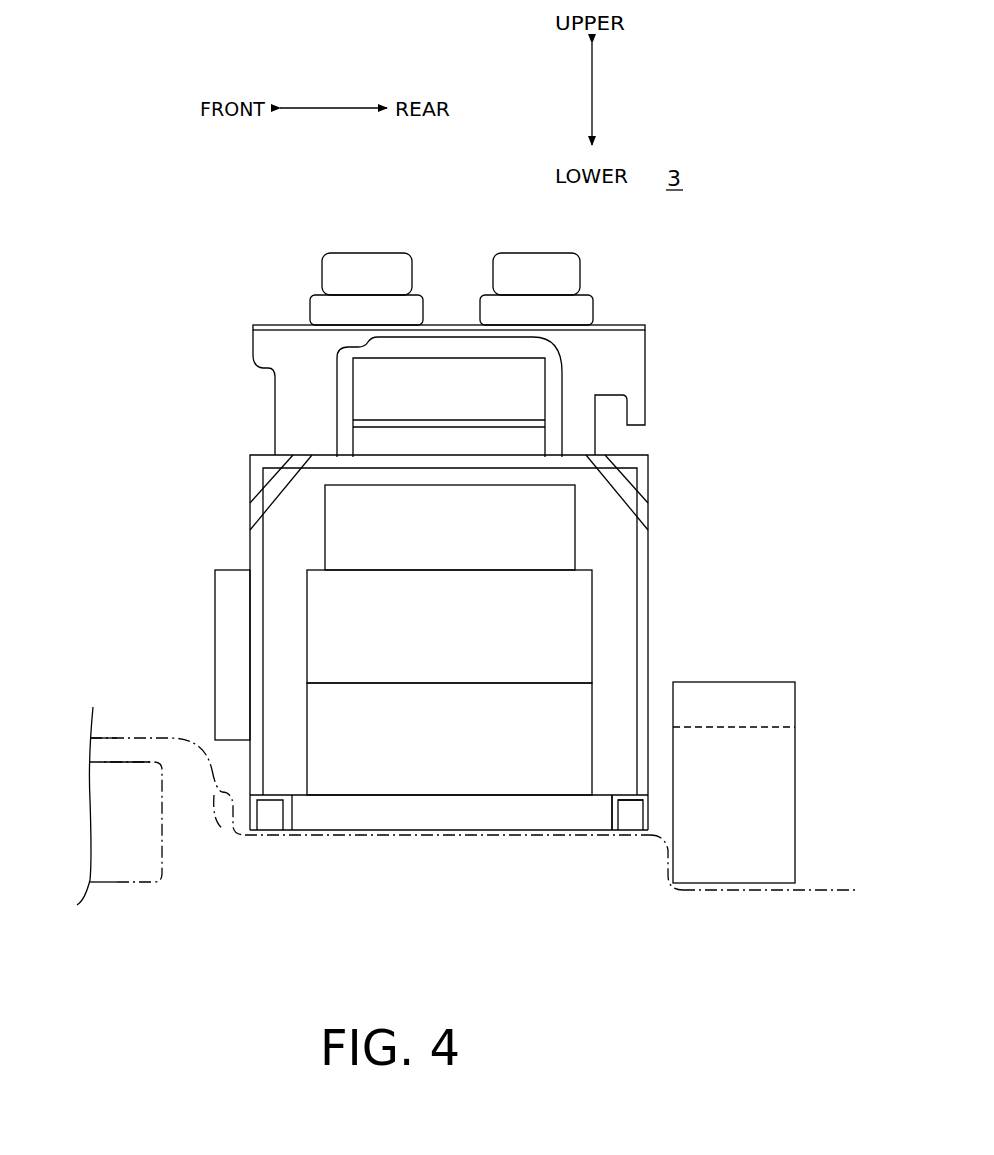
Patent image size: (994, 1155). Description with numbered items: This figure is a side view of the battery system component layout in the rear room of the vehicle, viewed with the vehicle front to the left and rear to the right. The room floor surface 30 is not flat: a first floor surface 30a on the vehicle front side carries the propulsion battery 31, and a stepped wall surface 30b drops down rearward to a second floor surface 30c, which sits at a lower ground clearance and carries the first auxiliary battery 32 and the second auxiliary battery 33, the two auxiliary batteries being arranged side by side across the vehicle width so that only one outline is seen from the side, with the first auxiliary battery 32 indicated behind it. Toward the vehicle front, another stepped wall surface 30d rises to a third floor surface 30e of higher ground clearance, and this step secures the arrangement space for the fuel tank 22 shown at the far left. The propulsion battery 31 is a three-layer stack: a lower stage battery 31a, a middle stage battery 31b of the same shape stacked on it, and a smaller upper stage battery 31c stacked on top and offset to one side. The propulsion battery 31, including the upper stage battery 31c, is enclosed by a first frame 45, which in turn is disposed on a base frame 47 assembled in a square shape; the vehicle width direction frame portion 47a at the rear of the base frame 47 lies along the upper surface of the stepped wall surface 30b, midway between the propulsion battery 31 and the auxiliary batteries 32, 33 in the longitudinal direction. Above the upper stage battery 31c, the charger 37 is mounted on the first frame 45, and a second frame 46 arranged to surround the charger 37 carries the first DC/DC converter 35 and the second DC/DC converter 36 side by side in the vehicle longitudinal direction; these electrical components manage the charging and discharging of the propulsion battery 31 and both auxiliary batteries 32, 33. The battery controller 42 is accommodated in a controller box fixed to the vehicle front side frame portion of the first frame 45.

The fuel tank 22 is at (103, 887).
The room floor surface 30 is at (458, 789).
The first floor surface 30a is at (348, 835).
The stepped wall surface 30b is at (678, 888).
The second floor surface 30c is at (730, 872).
The stepped wall surface 30d is at (232, 833).
The third floor surface 30e is at (132, 727).
The propulsion battery 31 is at (549, 640).
The lower stage battery 31a is at (570, 718).
The middle stage battery 31b is at (558, 627).
The upper stage battery 31c is at (538, 530).
The first auxiliary battery 32 is at (767, 727).
The second auxiliary battery 33 is at (748, 708).
The first DC/DC converter 35 is at (568, 309).
The second DC/DC converter 36 is at (325, 310).
The charger 37 is at (491, 396).
The battery controller 42 is at (228, 587).
The first frame 45 is at (258, 487).
The second frame 46 is at (285, 347).
The base frame 47 is at (448, 837).
The vehicle width direction frame portion 47a is at (630, 797).